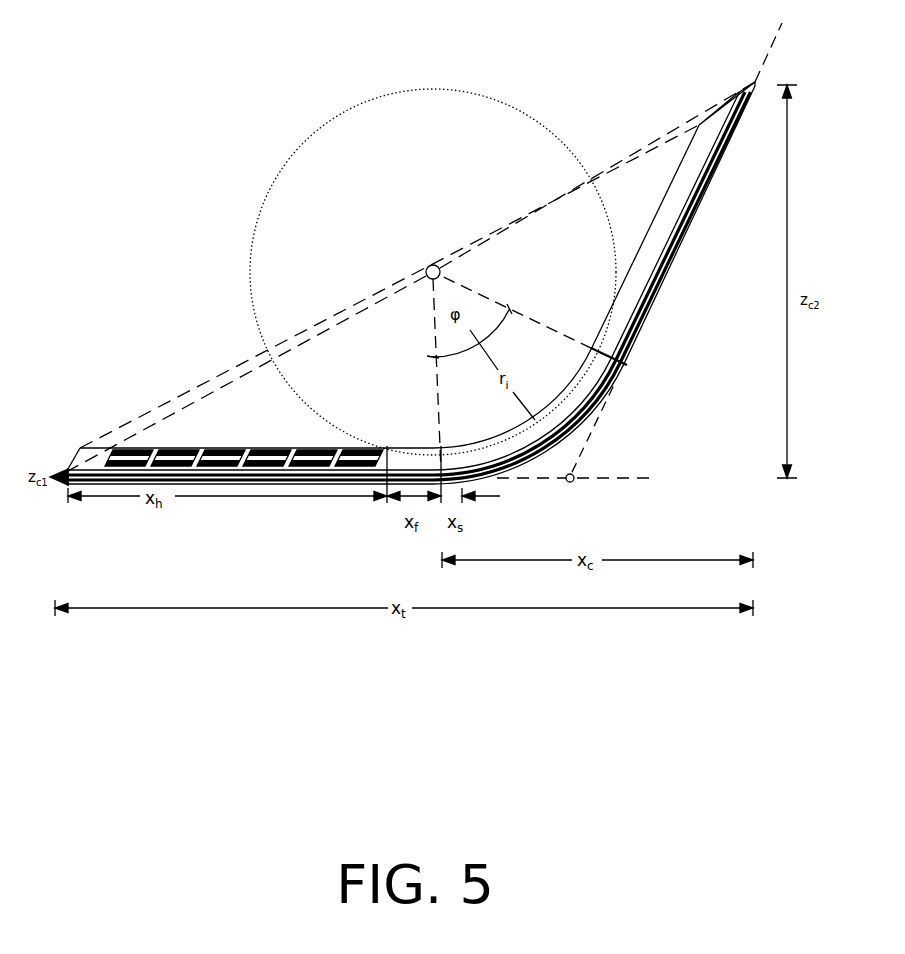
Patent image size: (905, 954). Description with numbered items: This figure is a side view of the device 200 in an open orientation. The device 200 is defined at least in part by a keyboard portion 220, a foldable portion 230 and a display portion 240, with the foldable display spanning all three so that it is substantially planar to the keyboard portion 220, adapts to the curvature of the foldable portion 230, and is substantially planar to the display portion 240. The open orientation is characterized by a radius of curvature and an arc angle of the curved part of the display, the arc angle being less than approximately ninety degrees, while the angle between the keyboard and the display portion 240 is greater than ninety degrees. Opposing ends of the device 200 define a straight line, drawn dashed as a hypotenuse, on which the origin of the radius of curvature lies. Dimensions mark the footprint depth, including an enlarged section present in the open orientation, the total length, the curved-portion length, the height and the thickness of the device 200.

The device 200 is at (136, 148).
The keyboard portion 220 is at (190, 480).
The foldable portion 230 is at (570, 440).
The display portion 240 is at (668, 288).